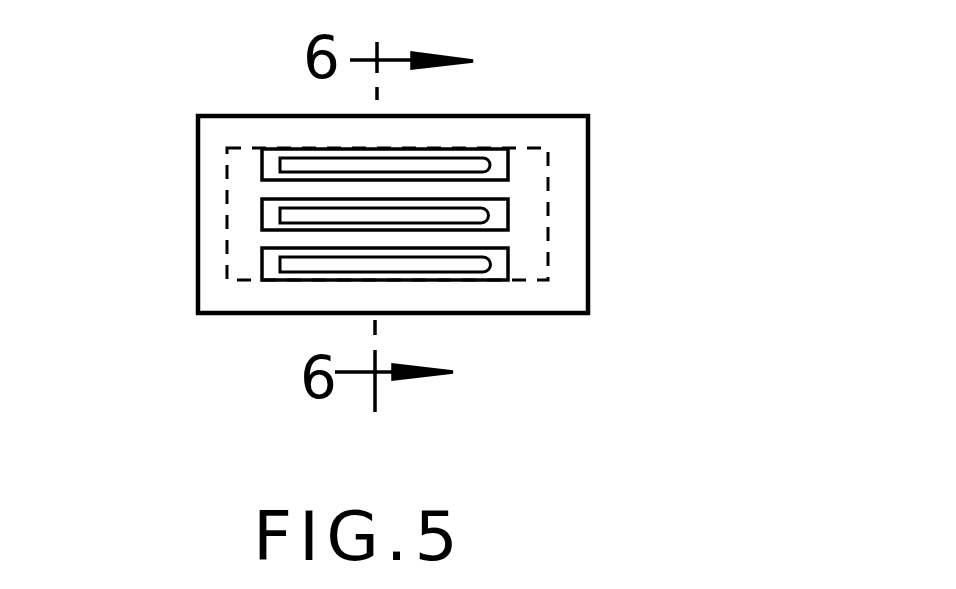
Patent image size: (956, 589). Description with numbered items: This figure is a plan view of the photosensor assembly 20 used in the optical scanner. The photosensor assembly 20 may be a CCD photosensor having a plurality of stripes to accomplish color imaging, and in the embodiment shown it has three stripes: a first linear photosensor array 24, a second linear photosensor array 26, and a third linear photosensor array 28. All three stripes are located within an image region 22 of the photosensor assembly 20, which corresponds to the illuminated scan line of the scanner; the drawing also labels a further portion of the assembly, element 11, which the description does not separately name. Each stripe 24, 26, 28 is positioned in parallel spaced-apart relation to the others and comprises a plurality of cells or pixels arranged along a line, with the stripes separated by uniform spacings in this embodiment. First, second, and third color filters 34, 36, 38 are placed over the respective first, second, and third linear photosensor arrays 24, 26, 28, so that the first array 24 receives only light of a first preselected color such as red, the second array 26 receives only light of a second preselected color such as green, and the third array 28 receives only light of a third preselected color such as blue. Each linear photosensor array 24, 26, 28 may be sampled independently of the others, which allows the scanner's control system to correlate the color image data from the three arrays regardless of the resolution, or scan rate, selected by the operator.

The sensor substrate 11 is at (523, 215).
The photosensor assembly 20 is at (570, 260).
The image region 22 is at (553, 167).
The first linear photosensor array 24 is at (467, 160).
The second linear photosensor array 26 is at (467, 220).
The third linear photosensor array 28 is at (460, 272).
The first color filter 34 is at (262, 169).
The second color filter 36 is at (262, 214).
The third color filter 38 is at (262, 266).